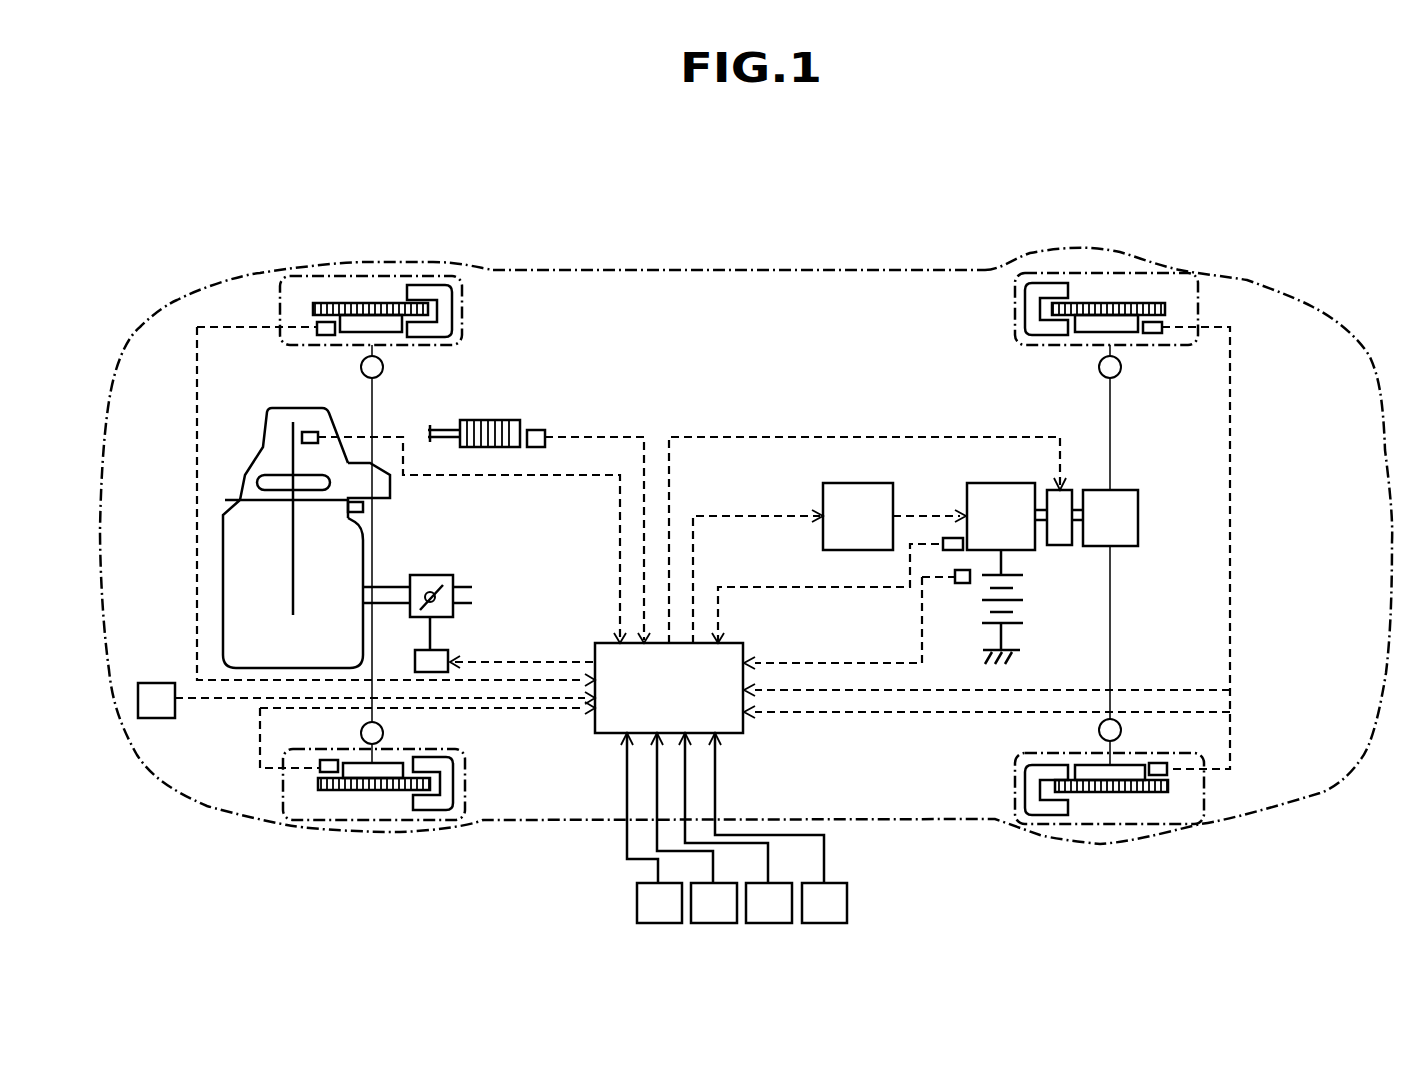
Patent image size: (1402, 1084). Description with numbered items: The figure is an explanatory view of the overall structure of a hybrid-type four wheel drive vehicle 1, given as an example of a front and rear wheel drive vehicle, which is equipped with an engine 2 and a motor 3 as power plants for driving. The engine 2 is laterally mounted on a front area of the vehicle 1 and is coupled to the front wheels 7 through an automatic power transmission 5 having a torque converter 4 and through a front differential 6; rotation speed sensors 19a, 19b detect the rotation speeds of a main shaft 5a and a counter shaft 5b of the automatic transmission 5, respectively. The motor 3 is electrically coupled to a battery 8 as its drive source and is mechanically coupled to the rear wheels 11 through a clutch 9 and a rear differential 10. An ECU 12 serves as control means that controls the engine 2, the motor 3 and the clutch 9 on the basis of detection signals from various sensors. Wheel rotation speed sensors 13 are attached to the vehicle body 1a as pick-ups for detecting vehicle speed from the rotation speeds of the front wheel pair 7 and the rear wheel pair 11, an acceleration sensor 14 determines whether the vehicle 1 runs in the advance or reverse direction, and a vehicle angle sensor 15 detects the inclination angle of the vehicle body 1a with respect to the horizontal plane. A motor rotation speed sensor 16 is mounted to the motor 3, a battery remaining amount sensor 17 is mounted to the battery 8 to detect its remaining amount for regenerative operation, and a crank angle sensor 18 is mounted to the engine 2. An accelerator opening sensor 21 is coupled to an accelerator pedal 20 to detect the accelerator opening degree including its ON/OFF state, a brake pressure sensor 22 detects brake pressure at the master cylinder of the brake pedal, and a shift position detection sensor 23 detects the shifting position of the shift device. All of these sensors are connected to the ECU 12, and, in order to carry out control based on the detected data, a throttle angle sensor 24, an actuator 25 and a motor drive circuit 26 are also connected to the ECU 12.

The vehicle 1 is at (828, 207).
The vehicle body 1a is at (727, 270).
The engine 2 is at (235, 612).
The motor 3 is at (1002, 485).
The torque converter 4 is at (257, 482).
The automatic power transmission 5 is at (267, 458).
The main shaft 5a is at (292, 550).
The counter shaft 5b is at (194, 337).
The front differential 6 is at (378, 500).
The front wheels 7 is at (348, 272).
The battery 8 is at (1018, 627).
The clutch 9 is at (1062, 547).
The rear differential 10 is at (1117, 527).
The rear wheels 11 is at (1110, 270).
The ECU 12 is at (750, 720).
The wheel rotation speed sensors 13 is at (318, 327).
The acceleration sensor 14 is at (781, 828).
The vehicle angle sensor 15 is at (654, 828).
The motor rotation speed sensor 16 is at (943, 540).
The battery remaining amount sensor 17 is at (960, 585).
The crank angle sensor 18 is at (348, 518).
The rotation speed sensor 19a is at (194, 337).
The rotation speed sensor 19b is at (307, 432).
The accelerator pedal 20 is at (492, 420).
The accelerator opening sensor 21 is at (538, 430).
The brake pressure sensor 22 is at (697, 828).
The shift position detection sensor 23 is at (738, 828).
The throttle angle sensor 24 is at (438, 582).
The actuator 25 is at (447, 648).
The motor drive circuit 26 is at (837, 483).